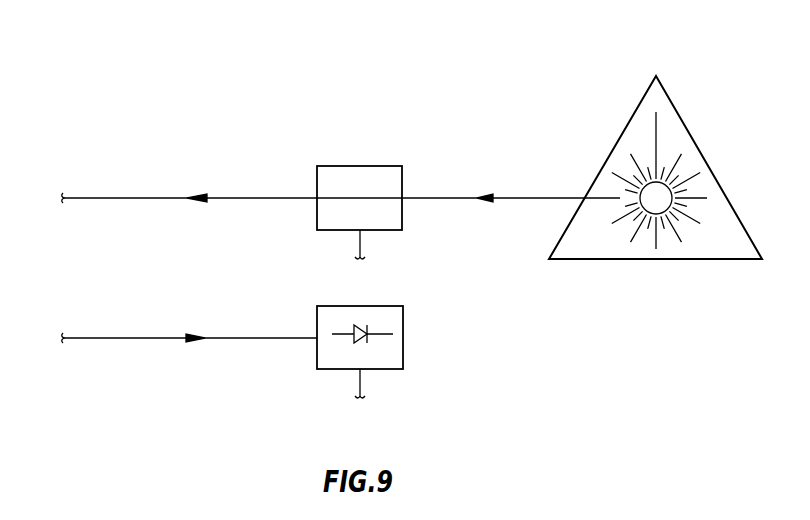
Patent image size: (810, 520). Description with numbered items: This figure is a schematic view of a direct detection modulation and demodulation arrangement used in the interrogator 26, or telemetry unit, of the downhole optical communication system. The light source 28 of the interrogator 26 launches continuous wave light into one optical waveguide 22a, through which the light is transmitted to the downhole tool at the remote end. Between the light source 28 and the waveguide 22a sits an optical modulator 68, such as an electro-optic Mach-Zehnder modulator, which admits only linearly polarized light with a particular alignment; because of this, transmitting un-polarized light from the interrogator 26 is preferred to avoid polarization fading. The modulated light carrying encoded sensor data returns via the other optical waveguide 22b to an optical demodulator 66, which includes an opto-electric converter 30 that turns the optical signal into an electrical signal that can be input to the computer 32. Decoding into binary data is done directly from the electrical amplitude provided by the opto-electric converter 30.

The optical waveguide 22a is at (103, 197).
The optical waveguide 22b is at (103, 337).
The interrogator 26 is at (546, 90).
The light source 28 is at (678, 108).
The opto-electric converter 30 is at (378, 337).
The computer 32 is at (361, 330).
The optical demodulator 66 is at (317, 348).
The optical modulator 68 is at (352, 165).